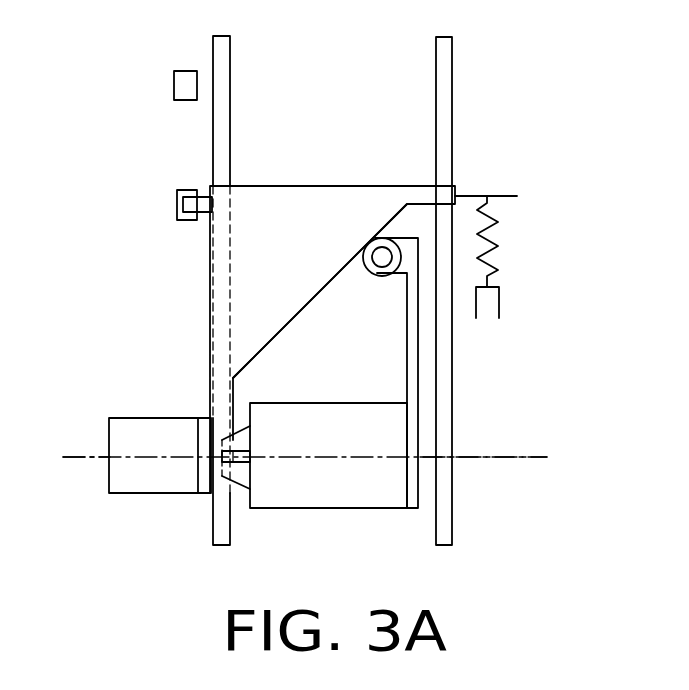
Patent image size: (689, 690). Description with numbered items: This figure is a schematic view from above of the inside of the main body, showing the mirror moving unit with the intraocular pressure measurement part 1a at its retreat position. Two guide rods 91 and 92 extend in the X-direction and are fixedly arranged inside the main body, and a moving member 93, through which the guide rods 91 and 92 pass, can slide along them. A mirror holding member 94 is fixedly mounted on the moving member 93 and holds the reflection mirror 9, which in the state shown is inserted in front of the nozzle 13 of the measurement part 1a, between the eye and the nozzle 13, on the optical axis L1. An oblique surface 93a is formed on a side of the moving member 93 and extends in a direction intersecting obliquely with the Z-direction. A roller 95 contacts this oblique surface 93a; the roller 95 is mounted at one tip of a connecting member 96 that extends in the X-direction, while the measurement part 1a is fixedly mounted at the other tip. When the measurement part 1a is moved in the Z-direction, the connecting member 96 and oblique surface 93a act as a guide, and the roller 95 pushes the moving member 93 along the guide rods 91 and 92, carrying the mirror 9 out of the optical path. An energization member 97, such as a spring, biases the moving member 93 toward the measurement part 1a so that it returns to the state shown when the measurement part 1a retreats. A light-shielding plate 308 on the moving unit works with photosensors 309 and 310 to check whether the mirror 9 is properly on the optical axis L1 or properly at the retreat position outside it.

The photosensor 310 is at (180, 88).
The guide rod 91 is at (222, 134).
The guide rod 92 is at (444, 103).
The light-shielding plate 308 is at (197, 207).
The photosensor 309 is at (185, 210).
The moving member 93 is at (285, 255).
The oblique surface 93a is at (305, 307).
The roller 95 is at (364, 268).
The connecting member 96 is at (420, 365).
The energization member 97 is at (495, 243).
The mirror holding member 94 is at (205, 427).
The reflection mirror 9 is at (128, 455).
The nozzle 13 is at (237, 465).
The intraocular pressure measurement part 1a is at (338, 465).
The optical axis L1 is at (505, 457).